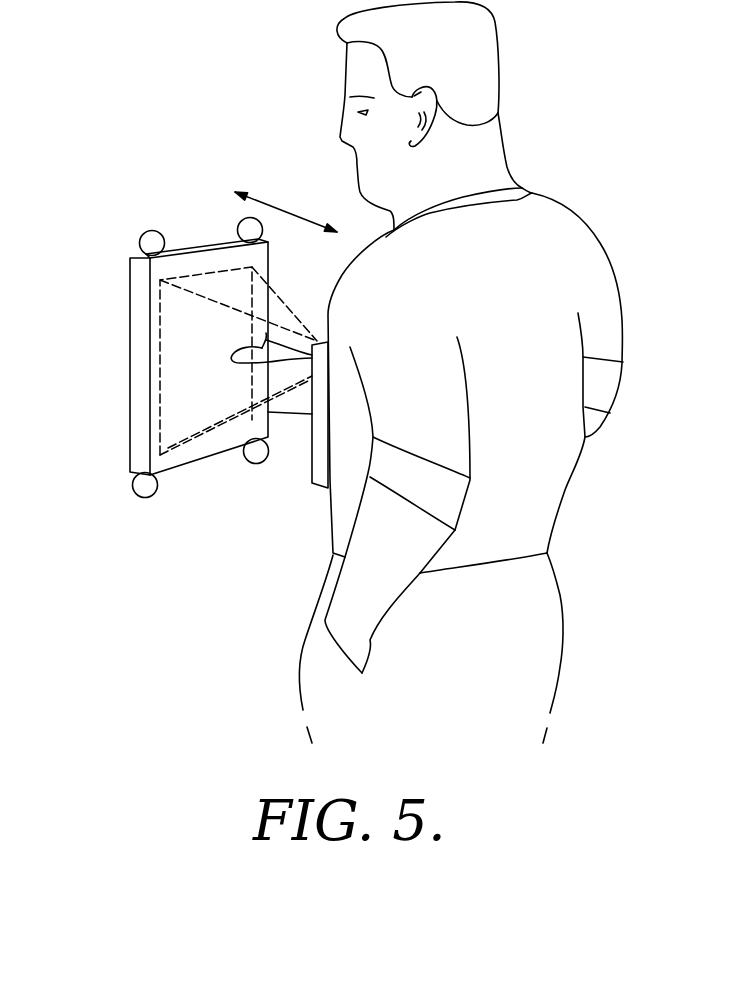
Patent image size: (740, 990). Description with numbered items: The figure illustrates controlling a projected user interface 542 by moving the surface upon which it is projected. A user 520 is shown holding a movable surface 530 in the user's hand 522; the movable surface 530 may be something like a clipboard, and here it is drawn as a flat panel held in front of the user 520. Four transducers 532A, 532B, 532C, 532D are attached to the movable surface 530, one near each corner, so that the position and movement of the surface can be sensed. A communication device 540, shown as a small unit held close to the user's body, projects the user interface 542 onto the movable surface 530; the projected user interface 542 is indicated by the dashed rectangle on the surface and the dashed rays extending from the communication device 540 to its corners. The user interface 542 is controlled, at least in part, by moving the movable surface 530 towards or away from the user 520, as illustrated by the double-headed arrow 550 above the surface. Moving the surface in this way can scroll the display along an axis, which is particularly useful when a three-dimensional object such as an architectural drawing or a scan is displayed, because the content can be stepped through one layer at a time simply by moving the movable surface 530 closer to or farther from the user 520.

The user 520 is at (563, 503).
The hand 522 is at (267, 340).
The movable surface 530 is at (130, 273).
The transducer 532A is at (242, 222).
The transducer 532B is at (140, 240).
The transducer 532C is at (244, 452).
The transducer 532D is at (133, 487).
The communication device 540 is at (307, 473).
The user interface 542 is at (184, 341).
The arrow 550 is at (294, 213).